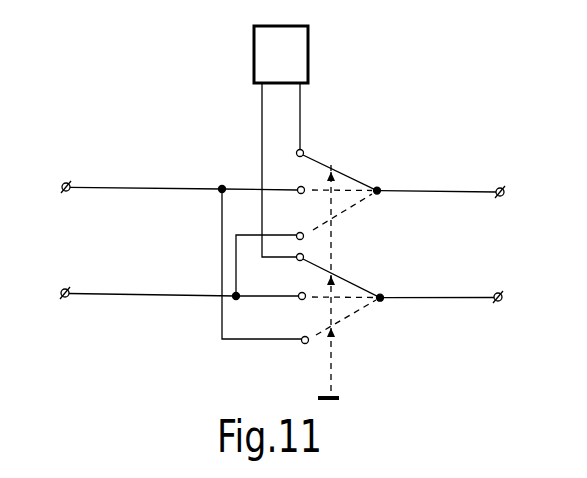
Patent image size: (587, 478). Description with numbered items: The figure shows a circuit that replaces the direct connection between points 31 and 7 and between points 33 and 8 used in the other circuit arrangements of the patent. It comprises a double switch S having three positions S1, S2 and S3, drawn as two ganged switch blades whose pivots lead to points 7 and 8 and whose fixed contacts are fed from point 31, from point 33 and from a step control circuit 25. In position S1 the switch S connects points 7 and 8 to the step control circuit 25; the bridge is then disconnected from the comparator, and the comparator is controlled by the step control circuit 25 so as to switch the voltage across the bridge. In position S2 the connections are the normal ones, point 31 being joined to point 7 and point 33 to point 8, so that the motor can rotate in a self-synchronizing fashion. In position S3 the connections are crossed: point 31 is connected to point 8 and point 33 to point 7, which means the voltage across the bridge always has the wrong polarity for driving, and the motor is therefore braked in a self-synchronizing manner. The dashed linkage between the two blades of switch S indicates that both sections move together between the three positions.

The step control circuit 25 is at (303, 58).
The point 31 is at (64, 182).
The point 33 is at (64, 291).
The point 7 is at (503, 195).
The point 8 is at (502, 293).
The double switch S is at (346, 178).
The switch position S1 is at (306, 155).
The switch position S2 is at (306, 292).
The switch position S3 is at (307, 336).